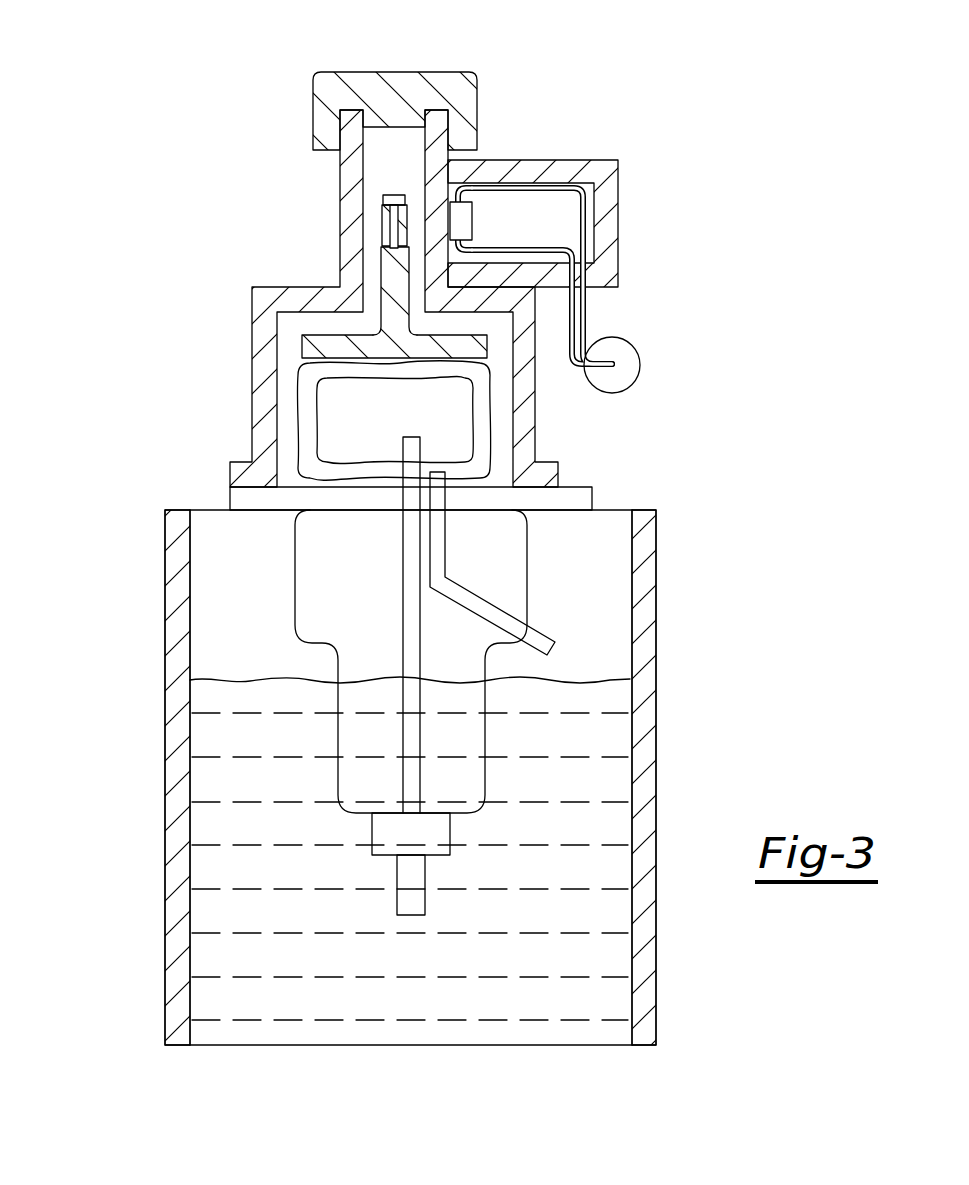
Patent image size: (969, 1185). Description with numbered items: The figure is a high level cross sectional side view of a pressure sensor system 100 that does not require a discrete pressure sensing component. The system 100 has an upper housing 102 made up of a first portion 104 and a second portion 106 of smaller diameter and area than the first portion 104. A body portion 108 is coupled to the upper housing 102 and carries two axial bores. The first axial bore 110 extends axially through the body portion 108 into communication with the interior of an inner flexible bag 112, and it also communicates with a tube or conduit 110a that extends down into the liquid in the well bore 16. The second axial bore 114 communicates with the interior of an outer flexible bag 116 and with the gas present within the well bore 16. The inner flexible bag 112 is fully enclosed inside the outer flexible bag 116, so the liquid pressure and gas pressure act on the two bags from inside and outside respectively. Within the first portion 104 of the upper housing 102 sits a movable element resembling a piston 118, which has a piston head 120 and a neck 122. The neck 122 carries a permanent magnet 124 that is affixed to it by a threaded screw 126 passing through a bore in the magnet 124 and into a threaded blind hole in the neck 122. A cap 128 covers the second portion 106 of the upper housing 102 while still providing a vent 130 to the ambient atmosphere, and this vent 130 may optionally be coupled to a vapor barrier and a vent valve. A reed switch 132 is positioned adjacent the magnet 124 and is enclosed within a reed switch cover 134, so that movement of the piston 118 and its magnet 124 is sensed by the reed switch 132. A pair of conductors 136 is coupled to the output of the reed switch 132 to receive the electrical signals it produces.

The well bore 16 is at (165, 745).
The pressure sensor system 100 is at (220, 78).
The upper housing 102 is at (552, 403).
The first portion 104 is at (497, 473).
The second portion 106 is at (423, 260).
The body portion 108 is at (327, 571).
The first axial bore 110 is at (402, 612).
The tube or conduit 110a is at (397, 872).
The inner flexible bag 112 is at (338, 425).
The second axial bore 114 is at (495, 605).
The outer flexible bag 116 is at (483, 451).
The piston 118 is at (314, 324).
The piston head 120 is at (393, 328).
The neck 122 is at (390, 283).
The permanent magnet 124 is at (382, 214).
The threaded screw 126 is at (383, 203).
The cap 128 is at (383, 95).
The vent 130 is at (321, 143).
The reed switch 132 is at (473, 213).
The reed switch cover 134 is at (618, 203).
The conductors 136 is at (580, 313).